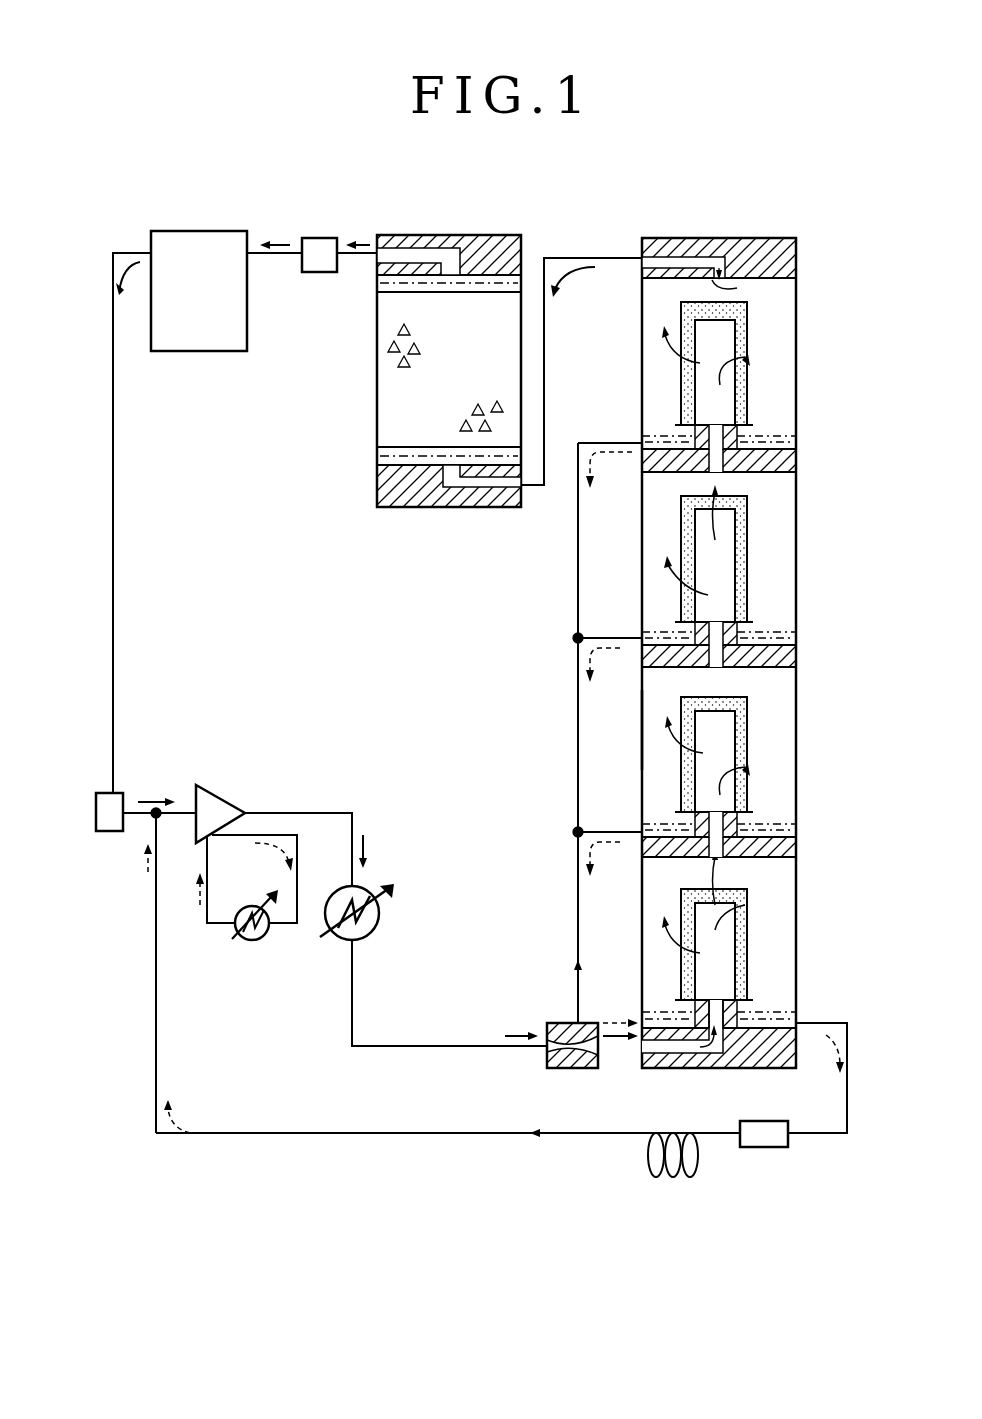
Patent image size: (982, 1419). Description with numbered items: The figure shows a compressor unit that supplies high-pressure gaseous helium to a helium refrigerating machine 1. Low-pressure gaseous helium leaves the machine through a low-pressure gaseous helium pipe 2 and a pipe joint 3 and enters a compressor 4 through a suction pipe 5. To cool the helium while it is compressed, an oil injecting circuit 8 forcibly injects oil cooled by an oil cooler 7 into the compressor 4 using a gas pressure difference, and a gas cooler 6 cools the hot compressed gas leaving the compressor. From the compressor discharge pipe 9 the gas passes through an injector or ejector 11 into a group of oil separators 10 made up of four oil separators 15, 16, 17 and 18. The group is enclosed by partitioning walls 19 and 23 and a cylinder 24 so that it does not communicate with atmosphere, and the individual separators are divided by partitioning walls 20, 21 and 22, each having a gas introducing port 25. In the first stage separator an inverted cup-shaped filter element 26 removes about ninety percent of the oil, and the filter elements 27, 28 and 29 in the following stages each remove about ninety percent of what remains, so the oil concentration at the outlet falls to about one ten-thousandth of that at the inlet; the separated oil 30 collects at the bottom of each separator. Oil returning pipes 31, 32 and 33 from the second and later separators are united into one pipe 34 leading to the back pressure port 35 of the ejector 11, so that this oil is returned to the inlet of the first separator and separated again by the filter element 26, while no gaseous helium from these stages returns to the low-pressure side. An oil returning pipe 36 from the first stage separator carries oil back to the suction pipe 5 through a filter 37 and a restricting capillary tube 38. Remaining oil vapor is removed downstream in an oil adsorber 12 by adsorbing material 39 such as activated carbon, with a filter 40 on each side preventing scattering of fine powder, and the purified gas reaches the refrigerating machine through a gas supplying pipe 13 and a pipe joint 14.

The helium refrigerating machine 1 is at (232, 353).
The low-pressure gaseous helium pipe 2 is at (115, 500).
The pipe joint 3 is at (117, 793).
The compressor 4 is at (215, 790).
The suction pipe 5 is at (130, 833).
The gas cooler 6 is at (380, 920).
The oil cooler 7 is at (250, 940).
The oil injecting circuit 8 is at (207, 900).
The compressor discharge pipe 9 is at (415, 1046).
The group of oil separators 10 is at (716, 643).
The injector (ejector) 11 is at (547, 1030).
The oil adsorber 12 is at (482, 341).
The gas supplying pipe 13 is at (275, 256).
The pipe joint 14 is at (318, 238).
The oil separator 15 is at (716, 925).
The oil separator 16 is at (750, 754).
The oil separator 17 is at (749, 553).
The oil separator 18 is at (748, 354).
The partitioning wall 19 is at (785, 1055).
The partitioning wall 20 is at (785, 852).
The partitioning wall 21 is at (780, 655).
The partitioning wall 22 is at (780, 462).
The partitioning wall 23 is at (757, 240).
The cylinder 24 is at (640, 728).
The gas introducing port 25 is at (715, 476).
The filter element 26 is at (681, 905).
The filter element 27 is at (747, 722).
The filter element 28 is at (747, 605).
The bubble cap 29 is at (747, 352).
The oil 30 is at (662, 436).
The oil returning pipe 31 is at (615, 828).
The oil returning pipe 32 is at (615, 636).
The oil returning pipe 33 is at (610, 440).
The pipe 34 is at (578, 895).
The back pressure port 35 is at (578, 1022).
The oil returning pipe 36 is at (822, 1023).
The filter 37 is at (765, 1147).
The capillary tube 38 is at (668, 1177).
The adsorbing material 39 is at (395, 418).
The filter 40 is at (495, 236).